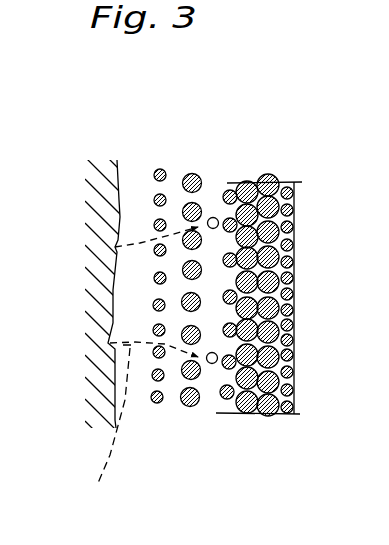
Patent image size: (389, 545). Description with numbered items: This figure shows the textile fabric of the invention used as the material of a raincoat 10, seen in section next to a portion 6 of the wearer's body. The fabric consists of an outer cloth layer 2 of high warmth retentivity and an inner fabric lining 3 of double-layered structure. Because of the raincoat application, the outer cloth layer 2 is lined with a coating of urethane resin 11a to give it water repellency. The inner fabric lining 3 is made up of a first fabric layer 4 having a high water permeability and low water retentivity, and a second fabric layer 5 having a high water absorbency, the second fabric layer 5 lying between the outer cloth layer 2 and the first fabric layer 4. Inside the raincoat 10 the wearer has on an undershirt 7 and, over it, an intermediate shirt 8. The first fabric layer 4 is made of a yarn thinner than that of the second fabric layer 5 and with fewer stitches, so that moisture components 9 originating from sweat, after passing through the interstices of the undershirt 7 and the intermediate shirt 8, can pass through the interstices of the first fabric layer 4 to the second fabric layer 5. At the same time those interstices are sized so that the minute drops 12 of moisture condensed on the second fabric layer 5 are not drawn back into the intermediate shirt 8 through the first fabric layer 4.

The outer cloth layer 2 is at (268, 179).
The inner fabric lining 3 is at (257, 156).
The first fabric layer 4 is at (217, 402).
The second fabric layer 5 is at (250, 419).
The body portion 6 is at (100, 313).
The undershirt 7 is at (155, 406).
The intermediate shirt 8 is at (188, 408).
The moisture components 9 is at (113, 429).
The raincoat 10 is at (297, 438).
The coating of urethane resin 11a is at (293, 180).
The minute drops of moisture 12 is at (213, 217).